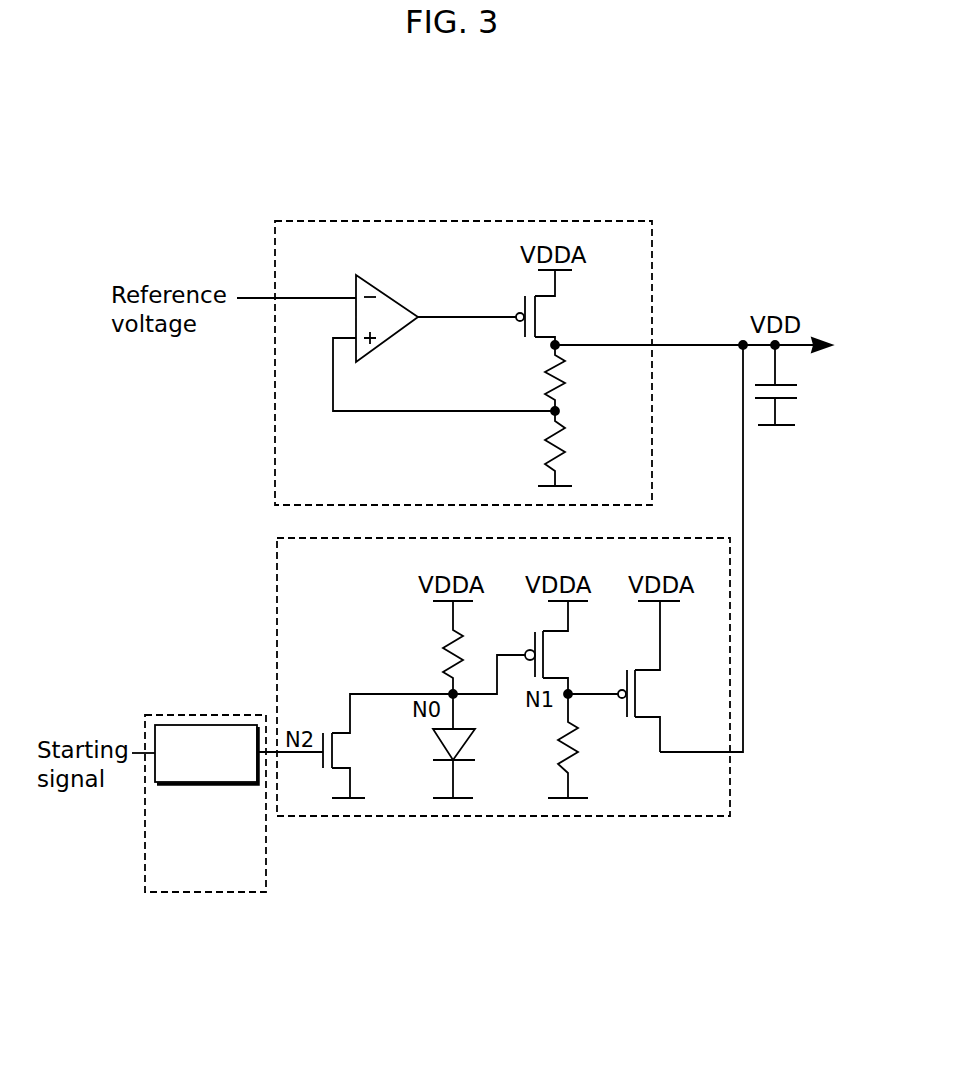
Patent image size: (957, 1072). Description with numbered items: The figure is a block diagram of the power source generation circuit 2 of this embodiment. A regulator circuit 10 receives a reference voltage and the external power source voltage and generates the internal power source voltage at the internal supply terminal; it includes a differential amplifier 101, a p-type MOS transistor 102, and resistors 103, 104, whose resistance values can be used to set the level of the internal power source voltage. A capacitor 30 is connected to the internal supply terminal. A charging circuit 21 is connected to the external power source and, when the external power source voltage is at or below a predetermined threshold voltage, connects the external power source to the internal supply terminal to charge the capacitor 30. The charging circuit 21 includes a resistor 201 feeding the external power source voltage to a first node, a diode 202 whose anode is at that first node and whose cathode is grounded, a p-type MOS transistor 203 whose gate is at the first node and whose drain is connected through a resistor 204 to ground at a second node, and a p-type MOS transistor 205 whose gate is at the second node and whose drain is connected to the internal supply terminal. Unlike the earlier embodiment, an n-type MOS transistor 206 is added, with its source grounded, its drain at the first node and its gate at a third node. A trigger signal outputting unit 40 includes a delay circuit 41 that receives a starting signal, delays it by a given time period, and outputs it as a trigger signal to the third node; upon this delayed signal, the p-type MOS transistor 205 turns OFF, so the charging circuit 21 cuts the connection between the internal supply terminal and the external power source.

The power source generation circuit 2 is at (764, 207).
The regulator circuit 10 is at (275, 240).
The differential amplifier 101 is at (396, 291).
The p-type MOS transistor 102 is at (558, 318).
The resistor 103 is at (559, 382).
The resistor 104 is at (559, 449).
The capacitor 30 is at (795, 396).
The charging circuit 21 is at (277, 570).
The resistor 201 is at (437, 658).
The diode 202 is at (436, 745).
The p-type MOS transistor 203 is at (555, 658).
The resistor 204 is at (555, 746).
The p-type MOS transistor 205 is at (655, 695).
The n-type MOS transistor 206 is at (345, 752).
The trigger signal outputting unit 40 is at (228, 892).
The delay circuit 41 is at (213, 725).